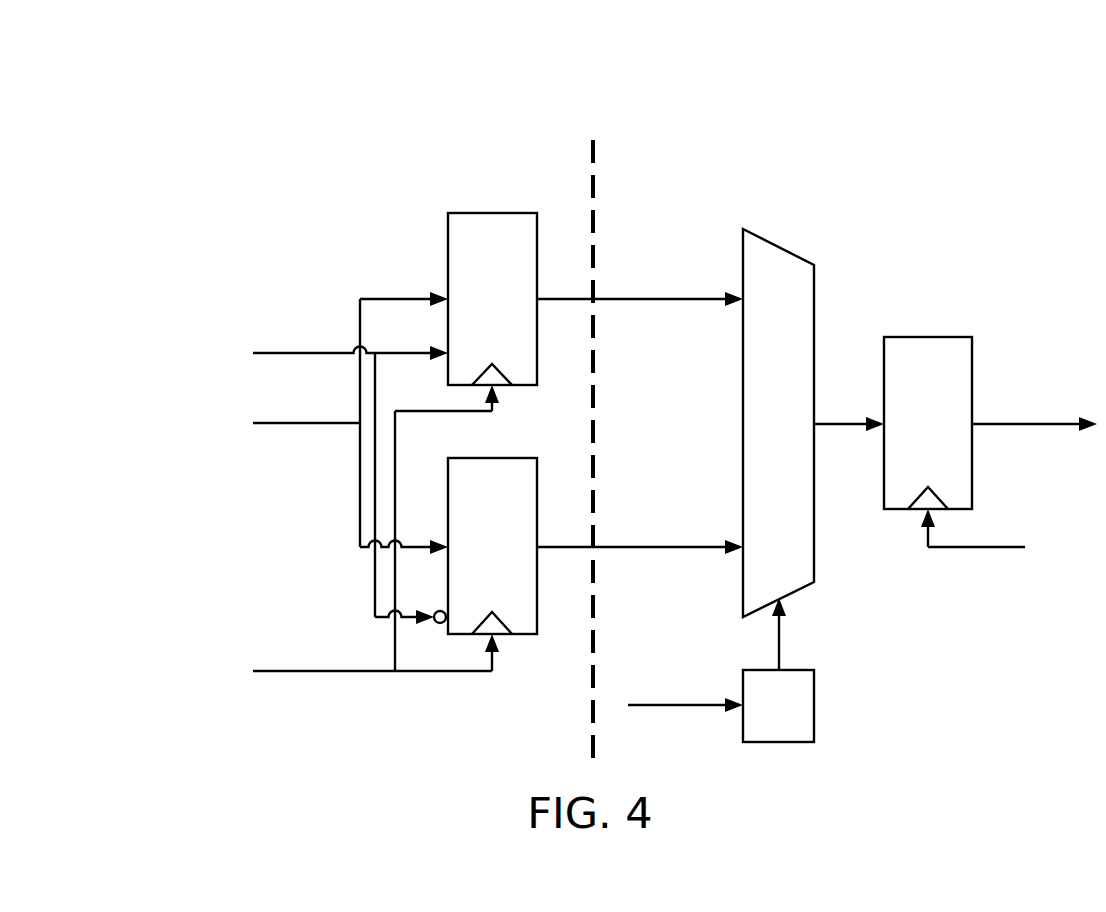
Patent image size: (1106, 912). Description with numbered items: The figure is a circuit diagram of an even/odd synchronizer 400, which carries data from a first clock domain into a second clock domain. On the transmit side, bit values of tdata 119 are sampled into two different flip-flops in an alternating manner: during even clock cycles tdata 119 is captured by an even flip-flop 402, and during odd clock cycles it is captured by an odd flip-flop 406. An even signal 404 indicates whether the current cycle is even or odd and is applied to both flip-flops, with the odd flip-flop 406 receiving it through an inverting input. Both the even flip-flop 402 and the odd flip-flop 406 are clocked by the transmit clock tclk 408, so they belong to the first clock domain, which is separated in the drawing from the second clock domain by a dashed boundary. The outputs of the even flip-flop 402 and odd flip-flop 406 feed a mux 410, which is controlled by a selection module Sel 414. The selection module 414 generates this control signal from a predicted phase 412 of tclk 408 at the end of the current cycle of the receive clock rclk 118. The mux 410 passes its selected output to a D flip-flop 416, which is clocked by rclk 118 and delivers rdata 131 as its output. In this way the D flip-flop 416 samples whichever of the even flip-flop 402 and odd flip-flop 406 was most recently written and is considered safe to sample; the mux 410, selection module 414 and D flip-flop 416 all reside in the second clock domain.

The even/odd synchronizer 400 is at (496, 80).
The even flip-flop 402 is at (492, 299).
The even signal 404 is at (347, 477).
The tdata 119 is at (347, 423).
The odd flip-flop 406 is at (485, 546).
The transmit clock (tclk) 408 is at (376, 528).
The mux 410 is at (778, 423).
The phase 412 is at (685, 713).
The selection module (Sel) 414 is at (778, 670).
The D flip-flop 416 is at (928, 423).
The rdata 131 is at (1034, 416).
The rclk 118 is at (973, 528).